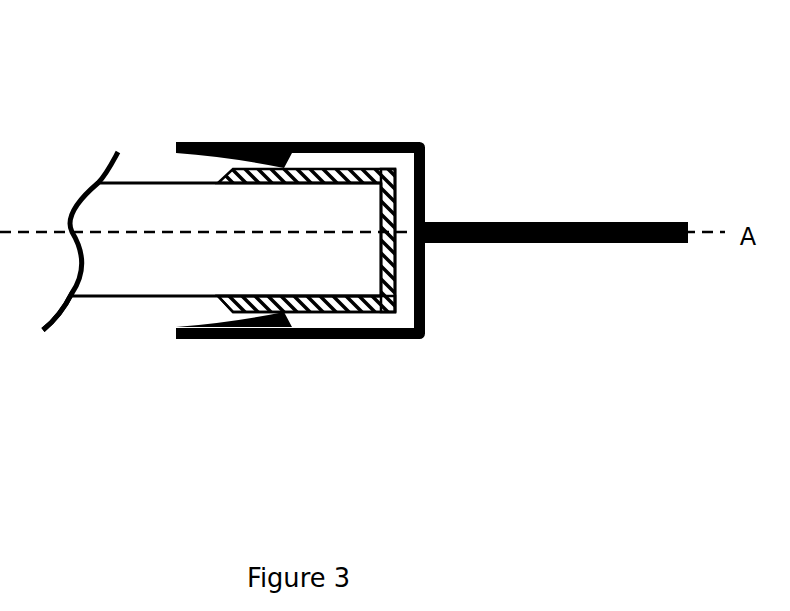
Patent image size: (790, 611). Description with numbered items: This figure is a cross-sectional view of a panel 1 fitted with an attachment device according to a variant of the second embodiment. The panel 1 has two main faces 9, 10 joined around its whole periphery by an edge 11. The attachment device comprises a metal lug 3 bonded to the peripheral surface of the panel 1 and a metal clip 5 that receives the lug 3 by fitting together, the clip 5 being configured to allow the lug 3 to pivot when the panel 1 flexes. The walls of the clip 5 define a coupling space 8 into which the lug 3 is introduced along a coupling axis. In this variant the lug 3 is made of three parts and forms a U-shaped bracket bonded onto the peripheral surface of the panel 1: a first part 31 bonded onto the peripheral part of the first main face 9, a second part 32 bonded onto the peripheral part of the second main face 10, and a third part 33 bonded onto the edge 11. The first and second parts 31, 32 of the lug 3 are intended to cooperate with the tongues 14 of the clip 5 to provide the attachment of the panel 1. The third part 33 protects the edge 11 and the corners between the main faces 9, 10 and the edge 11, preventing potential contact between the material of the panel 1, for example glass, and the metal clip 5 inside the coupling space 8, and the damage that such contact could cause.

The panel 1 is at (137, 190).
The metal lug 3 is at (322, 167).
The metal clip 5 is at (264, 338).
The coupling space 8 is at (402, 315).
The first main face 9 is at (107, 177).
The second main face 10 is at (89, 298).
The edge 11 is at (381, 209).
The tongues 14 is at (284, 167).
The first part 31 is at (368, 167).
The second part 32 is at (310, 312).
The third part 33 is at (384, 288).